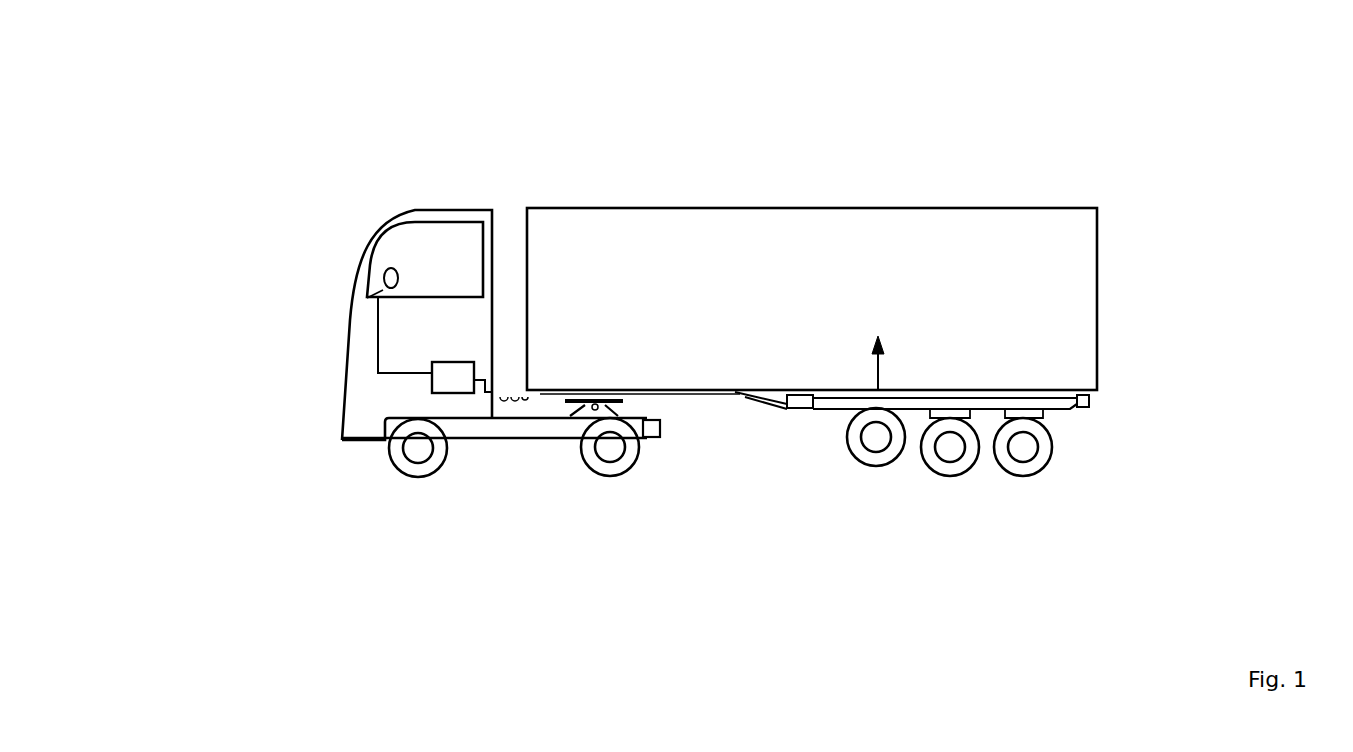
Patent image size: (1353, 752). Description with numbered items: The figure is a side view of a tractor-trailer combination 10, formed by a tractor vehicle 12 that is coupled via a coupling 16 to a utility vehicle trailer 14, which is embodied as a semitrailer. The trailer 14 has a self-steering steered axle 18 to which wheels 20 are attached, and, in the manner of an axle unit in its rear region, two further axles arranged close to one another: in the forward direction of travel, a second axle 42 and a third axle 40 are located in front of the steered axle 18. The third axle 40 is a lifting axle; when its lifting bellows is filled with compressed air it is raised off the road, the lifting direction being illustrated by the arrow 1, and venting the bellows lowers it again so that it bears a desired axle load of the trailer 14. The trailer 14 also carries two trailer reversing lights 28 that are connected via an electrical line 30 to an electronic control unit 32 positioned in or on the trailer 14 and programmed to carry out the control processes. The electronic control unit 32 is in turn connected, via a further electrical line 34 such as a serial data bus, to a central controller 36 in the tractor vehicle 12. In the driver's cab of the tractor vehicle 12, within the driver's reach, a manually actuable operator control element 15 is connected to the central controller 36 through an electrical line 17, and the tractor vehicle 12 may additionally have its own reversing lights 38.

The tractor-trailer combination 10 is at (742, 309).
The tractor vehicle 12 is at (471, 348).
The utility vehicle trailer 14 is at (866, 403).
The operator control element 15 is at (384, 280).
The electrical line 17 is at (377, 336).
The central controller 36 is at (455, 378).
The reversing lights 38 is at (655, 437).
The coupling 16 is at (615, 404).
The further electrical line 34 is at (760, 403).
The electronic control unit 32 is at (802, 408).
The electrical line 30 is at (837, 402).
The trailer reversing lights 28 is at (1090, 400).
The third axle 40 is at (875, 437).
The second axle 42 is at (950, 447).
The self-steering steered axle 18 is at (1023, 447).
The wheels 20 is at (1045, 450).
The arrow 1 is at (880, 360).